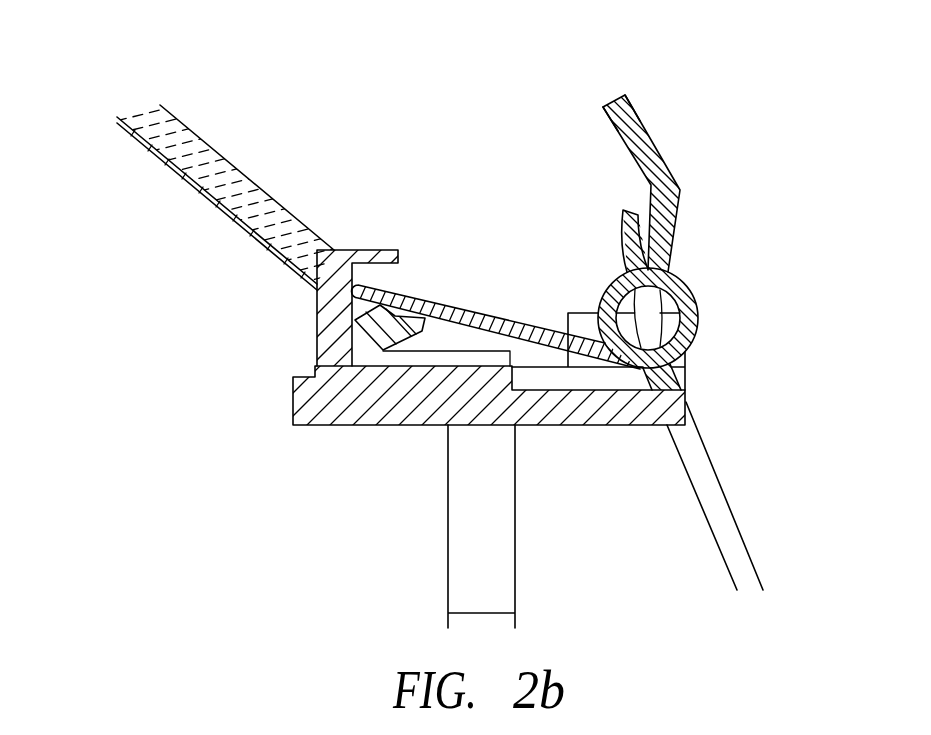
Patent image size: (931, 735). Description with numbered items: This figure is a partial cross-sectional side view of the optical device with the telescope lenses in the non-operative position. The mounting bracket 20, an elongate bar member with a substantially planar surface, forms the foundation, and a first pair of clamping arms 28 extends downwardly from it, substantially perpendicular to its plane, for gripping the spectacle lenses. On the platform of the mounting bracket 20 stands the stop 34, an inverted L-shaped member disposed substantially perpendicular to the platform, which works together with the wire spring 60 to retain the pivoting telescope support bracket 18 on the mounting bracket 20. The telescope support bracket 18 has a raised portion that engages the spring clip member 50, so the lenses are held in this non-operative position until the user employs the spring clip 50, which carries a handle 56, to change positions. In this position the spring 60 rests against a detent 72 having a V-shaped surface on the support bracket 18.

The telescope support bracket 18 is at (253, 210).
The mounting bracket 20 is at (545, 412).
The clamping arms 28 is at (467, 526).
The stop 34 is at (332, 326).
The spring clip member 50 is at (690, 175).
The handle 56 is at (627, 101).
The wire spring 60 is at (623, 229).
The detent 72 is at (393, 316).